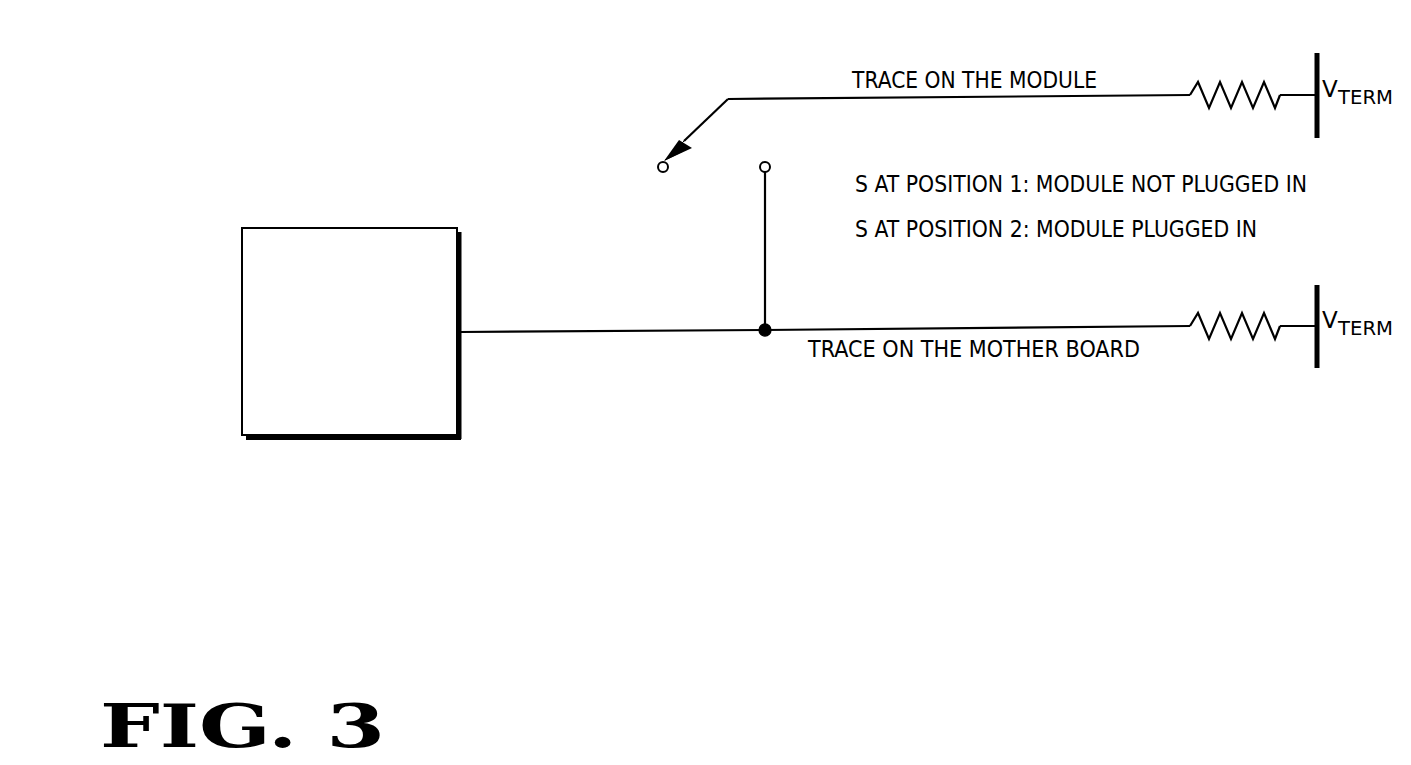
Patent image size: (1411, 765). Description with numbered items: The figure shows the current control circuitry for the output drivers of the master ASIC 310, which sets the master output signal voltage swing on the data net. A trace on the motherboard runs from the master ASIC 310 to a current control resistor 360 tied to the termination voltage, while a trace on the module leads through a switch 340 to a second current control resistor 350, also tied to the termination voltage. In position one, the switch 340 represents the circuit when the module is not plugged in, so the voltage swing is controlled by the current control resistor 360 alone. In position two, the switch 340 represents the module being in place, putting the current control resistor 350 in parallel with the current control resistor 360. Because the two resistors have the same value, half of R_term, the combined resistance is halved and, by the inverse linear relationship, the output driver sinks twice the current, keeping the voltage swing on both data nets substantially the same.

The master ASIC 310 is at (453, 428).
The switch 340 is at (713, 110).
The current control resistor 350 is at (1255, 130).
The current control resistor 360 is at (1255, 362).